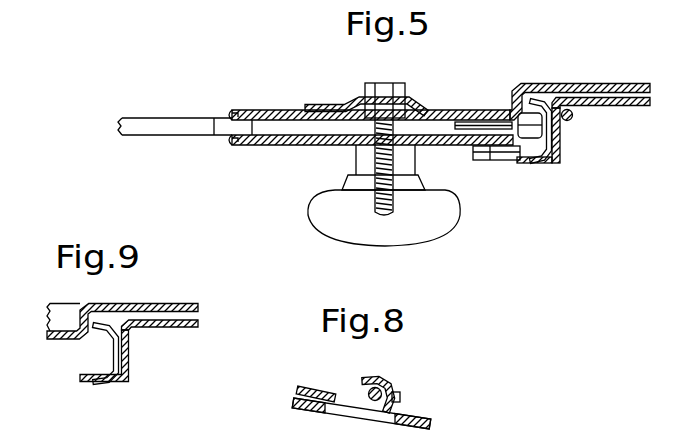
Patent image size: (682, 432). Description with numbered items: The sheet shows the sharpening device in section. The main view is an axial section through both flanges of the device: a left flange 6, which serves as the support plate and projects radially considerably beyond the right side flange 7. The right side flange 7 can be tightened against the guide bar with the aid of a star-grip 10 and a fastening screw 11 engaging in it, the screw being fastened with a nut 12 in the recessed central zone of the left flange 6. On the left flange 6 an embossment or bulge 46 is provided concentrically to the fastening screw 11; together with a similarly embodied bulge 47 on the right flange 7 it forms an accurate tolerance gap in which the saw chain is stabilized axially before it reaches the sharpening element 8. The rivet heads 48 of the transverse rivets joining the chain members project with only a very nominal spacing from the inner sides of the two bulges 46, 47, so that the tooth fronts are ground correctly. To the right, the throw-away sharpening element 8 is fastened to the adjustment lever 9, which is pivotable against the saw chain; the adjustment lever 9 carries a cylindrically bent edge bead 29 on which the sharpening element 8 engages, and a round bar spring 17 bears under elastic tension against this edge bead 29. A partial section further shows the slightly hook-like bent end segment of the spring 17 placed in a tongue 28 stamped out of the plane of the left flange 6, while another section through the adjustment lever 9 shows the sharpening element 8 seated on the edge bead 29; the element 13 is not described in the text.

In FIG. 5, the left flange 6 is at (283, 110).
In FIG. 8, the left flange 6 is at (430, 420).
In FIG. 5, the right side flange 7 is at (271, 142).
In FIG. 5, the sharpening element 8 is at (538, 162).
In FIG. 9, the sharpening element 8 is at (100, 365).
In FIG. 5, the adjustment lever 9 is at (633, 106).
In FIG. 9, the adjustment lever 9 is at (183, 327).
In FIG. 8, the adjustment lever 9 is at (307, 386).
In FIG. 5, the star-grip 10 is at (338, 222).
In FIG. 5, the fastening screw 11 is at (383, 95).
In FIG. 5, the nut 12 is at (427, 100).
In FIG. 5, the upper plate bracket 13 is at (547, 84).
In FIG. 5, the round bar spring 17 is at (573, 117).
In FIG. 8, the round bar spring 17 is at (398, 391).
In FIG. 8, the tongue 28 is at (365, 377).
In FIG. 5, the edge bead 29 is at (561, 146).
In FIG. 9, the edge bead 29 is at (148, 375).
In FIG. 5, the bulge 46 is at (493, 113).
In FIG. 5, the bulge 47 is at (487, 160).
In FIG. 5, the rivet heads 48 is at (505, 116).